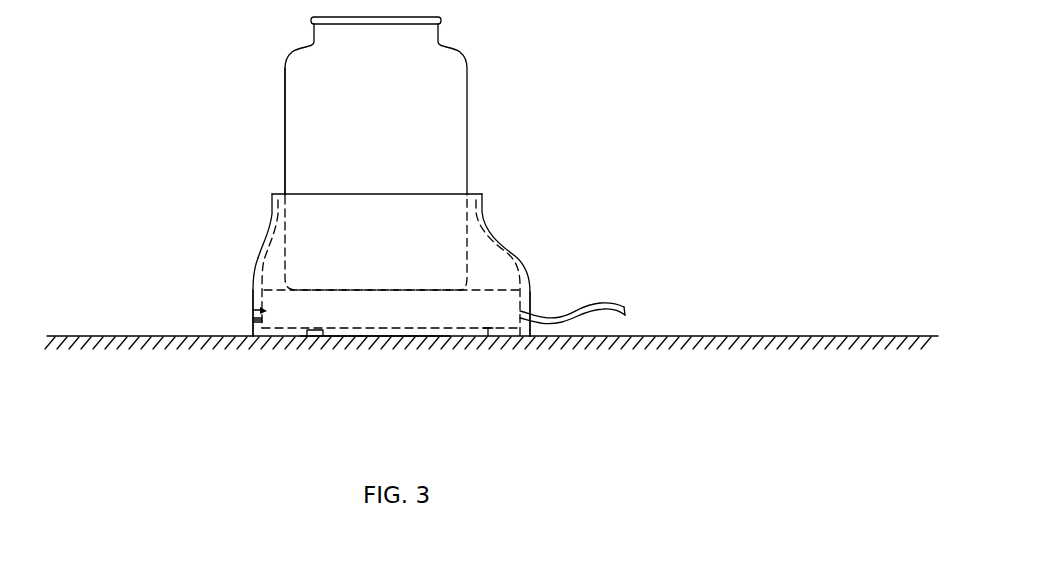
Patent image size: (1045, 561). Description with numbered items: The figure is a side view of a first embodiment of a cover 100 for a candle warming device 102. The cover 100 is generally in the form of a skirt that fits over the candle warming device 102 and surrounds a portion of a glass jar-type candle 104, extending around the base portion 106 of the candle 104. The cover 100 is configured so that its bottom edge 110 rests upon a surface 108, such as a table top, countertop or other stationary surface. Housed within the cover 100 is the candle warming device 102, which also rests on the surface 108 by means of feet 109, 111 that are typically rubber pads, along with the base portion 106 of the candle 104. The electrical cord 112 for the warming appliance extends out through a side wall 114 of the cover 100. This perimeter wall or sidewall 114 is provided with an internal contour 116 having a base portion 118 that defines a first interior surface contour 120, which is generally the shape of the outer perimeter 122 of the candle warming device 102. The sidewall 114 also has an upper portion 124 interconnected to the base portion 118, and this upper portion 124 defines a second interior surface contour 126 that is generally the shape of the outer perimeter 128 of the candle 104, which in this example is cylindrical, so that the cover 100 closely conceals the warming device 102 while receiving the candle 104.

The cover 100 is at (578, 281).
The candle warming device 102 is at (255, 270).
The glass jar-type candle 104 is at (452, 79).
The base portion of the candle 106 is at (258, 240).
The surface 108 is at (753, 337).
The foot 109 is at (300, 312).
The bottom edge 110 is at (375, 337).
The foot 111 is at (487, 340).
The electrical cord 112 is at (563, 323).
The side wall 114 is at (488, 222).
The internal contour 116 is at (517, 263).
The base portion of the sidewall 118 is at (250, 316).
The first interior surface contour 120 is at (300, 312).
The outer perimeter of the candle warming device 122 is at (250, 305).
The upper portion of the sidewall 124 is at (268, 212).
The second interior surface contour 126 is at (424, 194).
The outer perimeter of the candle 128 is at (285, 95).